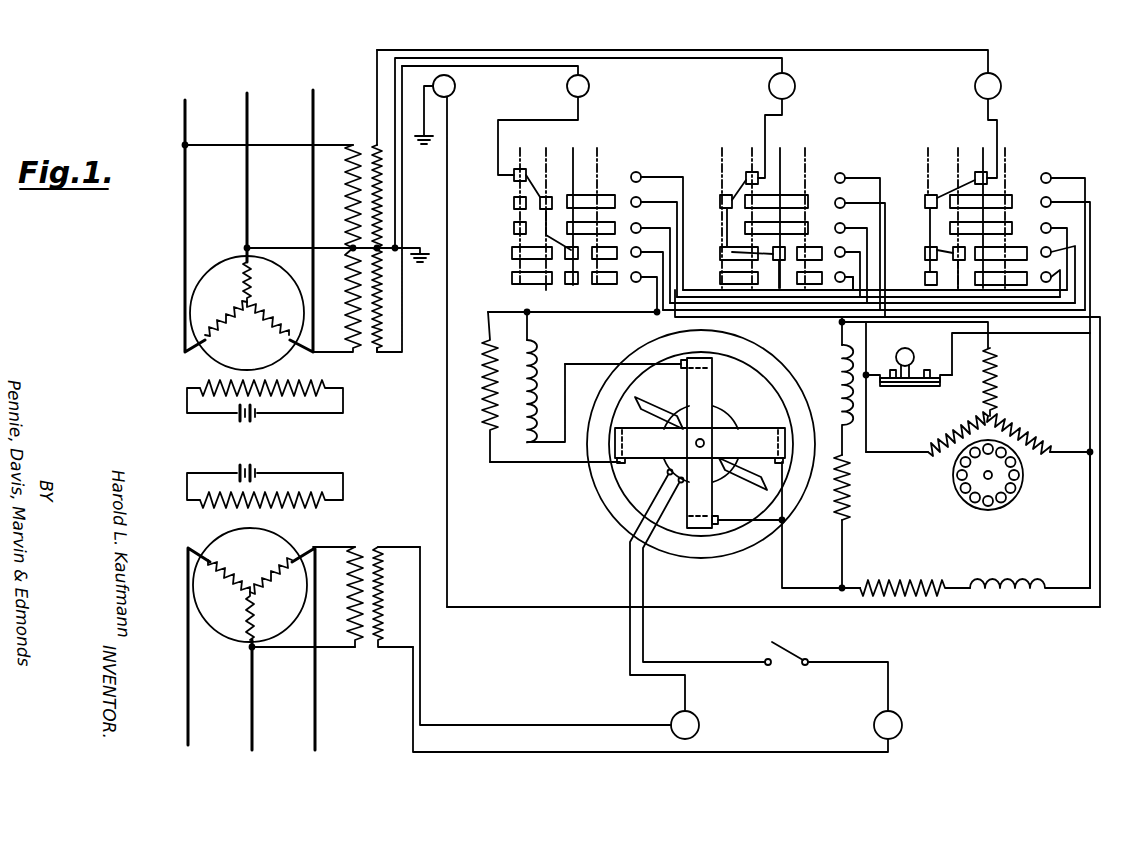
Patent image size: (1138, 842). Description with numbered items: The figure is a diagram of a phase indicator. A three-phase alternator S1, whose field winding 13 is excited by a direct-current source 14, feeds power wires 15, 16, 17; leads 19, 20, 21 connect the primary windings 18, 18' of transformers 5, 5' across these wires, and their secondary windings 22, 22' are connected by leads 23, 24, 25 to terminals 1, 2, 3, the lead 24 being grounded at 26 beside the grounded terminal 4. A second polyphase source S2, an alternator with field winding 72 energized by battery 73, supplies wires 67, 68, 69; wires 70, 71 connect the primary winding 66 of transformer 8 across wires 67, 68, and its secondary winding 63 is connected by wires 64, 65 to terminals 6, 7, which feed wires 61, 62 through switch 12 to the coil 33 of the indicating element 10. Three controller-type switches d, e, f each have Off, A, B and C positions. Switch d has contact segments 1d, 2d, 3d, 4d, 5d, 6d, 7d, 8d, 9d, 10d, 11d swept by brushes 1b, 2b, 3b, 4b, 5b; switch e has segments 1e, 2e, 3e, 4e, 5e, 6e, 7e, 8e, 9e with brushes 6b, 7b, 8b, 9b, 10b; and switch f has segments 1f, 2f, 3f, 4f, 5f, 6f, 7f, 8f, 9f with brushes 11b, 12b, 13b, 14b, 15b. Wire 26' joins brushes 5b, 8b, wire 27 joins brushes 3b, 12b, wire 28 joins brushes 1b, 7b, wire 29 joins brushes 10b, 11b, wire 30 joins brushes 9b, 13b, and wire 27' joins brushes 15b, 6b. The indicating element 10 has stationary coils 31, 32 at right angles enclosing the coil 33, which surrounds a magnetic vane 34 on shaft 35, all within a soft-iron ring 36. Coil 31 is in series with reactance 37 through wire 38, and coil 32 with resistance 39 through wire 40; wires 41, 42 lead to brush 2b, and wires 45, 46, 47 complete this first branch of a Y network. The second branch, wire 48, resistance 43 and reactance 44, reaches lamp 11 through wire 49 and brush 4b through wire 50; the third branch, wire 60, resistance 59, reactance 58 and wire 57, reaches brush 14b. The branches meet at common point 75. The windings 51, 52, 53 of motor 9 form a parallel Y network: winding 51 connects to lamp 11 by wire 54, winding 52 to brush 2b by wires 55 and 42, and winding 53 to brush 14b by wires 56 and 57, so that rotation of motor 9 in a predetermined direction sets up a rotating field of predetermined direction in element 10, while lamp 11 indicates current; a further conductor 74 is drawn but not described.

The terminal 1 is at (589, 86).
The terminal 2 is at (795, 86).
The terminal 3 is at (1000, 83).
The grounded terminal 4 is at (455, 86).
The transformer 5 is at (385, 367).
The transformer 5' is at (363, 97).
The terminal 6 is at (700, 722).
The terminal 7 is at (898, 715).
The transformer 8 is at (388, 543).
The motor 9 is at (953, 500).
The phase indicating element 10 is at (594, 517).
The incandescent lamp 11 is at (905, 396).
The switch 12 is at (801, 654).
The field winding 13 is at (215, 383).
The direct current source 14 is at (229, 421).
The power wire 15 is at (185, 205).
The power wire 16 is at (247, 190).
The power wire 17 is at (313, 195).
The primary winding 18 is at (337, 300).
The primary winding 18' is at (315, 196).
The lead 19 is at (262, 146).
The lead 20 is at (265, 248).
The lead 21 is at (325, 355).
The secondary winding 22 is at (407, 209).
The secondary winding 22' is at (403, 196).
The lead 23 is at (514, 66).
The lead 24 is at (556, 50).
The lead 25 is at (633, 58).
The ground connection 26 is at (412, 234).
The wire 26' is at (875, 307).
The wire 27 is at (868, 324).
The wire 27' is at (1039, 338).
The wire 28 is at (805, 312).
The wire 29 is at (1003, 299).
The wire 30 is at (1048, 300).
The stationary coil 31 is at (713, 375).
The stationary coil 32 is at (741, 428).
The third coil 33 is at (666, 470).
The magnetic vane 34 is at (749, 488).
The shaft 35 is at (695, 444).
The ring 36 is at (589, 481).
The reactance 37 is at (539, 356).
The wire 38 is at (585, 364).
The resistance 39 is at (482, 395).
The wire 40 is at (518, 462).
The wire 41 is at (555, 313).
The wire 42 is at (657, 313).
The resistance 43 is at (851, 484).
The reactance 44 is at (832, 385).
The wire 45 is at (752, 523).
The wire 46 is at (785, 503).
The wire 47 is at (784, 566).
The wire 48 is at (846, 560).
The wire 49 is at (867, 326).
The wire 50 is at (836, 323).
The motor winding 51 is at (948, 415).
The motor winding 52 is at (998, 380).
The motor winding 53 is at (1026, 436).
The wire 54 is at (893, 452).
The wire 55 is at (945, 322).
The wire 56 is at (1065, 455).
The wire 57 is at (1098, 382).
The reactance 58 is at (997, 585).
The resistance 59 is at (920, 584).
The wire 60 is at (858, 590).
The wire 61 is at (629, 666).
The wire 62 is at (711, 668).
The secondary winding 63 is at (390, 626).
The wire 64 is at (500, 722).
The wire 65 is at (535, 752).
The primary winding 66 is at (348, 580).
The power circuit wire 67 is at (251, 690).
The power circuit wire 68 is at (315, 685).
The power circuit wire 69 is at (190, 672).
The wire 70 is at (326, 648).
The wire 71 is at (322, 546).
The field winding 72 is at (205, 508).
The battery 73 is at (269, 469).
The conductor 74 is at (1092, 434).
The common point 75 is at (831, 589).
The three-phase alternator S1 is at (229, 313).
The polyphase alternator S2 is at (227, 585).
The switch d is at (630, 149).
The switch e is at (835, 149).
The switch f is at (1043, 157).
The contact segment 11d is at (514, 176).
The contact segment 10d is at (514, 203).
The contact segment 9d is at (514, 229).
The contact segment 8d is at (568, 200).
The contact segment 7d is at (512, 253).
The contact segment 6d is at (512, 278).
The contact segment 5d is at (546, 285).
The contact segment 4d is at (610, 195).
The contact segment 3d is at (620, 222).
The contact segment 2d is at (604, 285).
The contact segment 1d is at (573, 285).
The brush 5b is at (644, 176).
The brush 4b is at (643, 202).
The brush 3b is at (643, 227).
The brush 2b is at (643, 251).
The brush 1b is at (643, 276).
The brush 10b is at (846, 178).
The brush 9b is at (846, 203).
The brush 8b is at (846, 228).
The brush 7b is at (846, 252).
The brush 6b is at (846, 277).
The brush 15b is at (1052, 178).
The brush 14b is at (1052, 203).
The brush 13b is at (1052, 228).
The brush 12b is at (1052, 250).
The brush 11b is at (1052, 276).
The contact segment 9e is at (720, 198).
The contact segment 8e is at (757, 175).
The contact segment 7e is at (718, 250).
The contact segment 6e is at (718, 279).
The contact segment 5e is at (778, 283).
The contact segment 4e is at (784, 205).
The contact segment 3e is at (808, 228).
The contact segment 2e is at (812, 255).
The contact segment 1e is at (806, 276).
The contact segment 9f is at (925, 200).
The contact segment 8f is at (965, 178).
The contact segment 7f is at (925, 250).
The contact segment 6f is at (925, 279).
The contact segment 5f is at (958, 284).
The contact segment 4f is at (1004, 194).
The contact segment 3f is at (1012, 230).
The contact segment 2f is at (1014, 255).
The contact segment 1f is at (1018, 282).